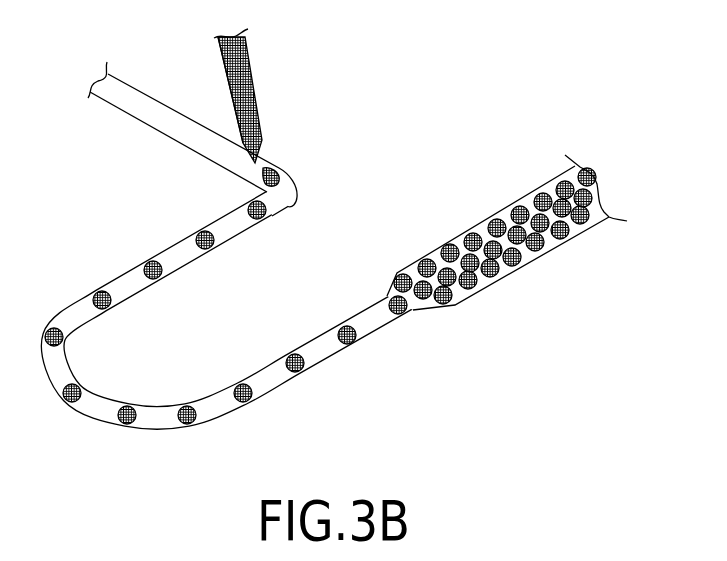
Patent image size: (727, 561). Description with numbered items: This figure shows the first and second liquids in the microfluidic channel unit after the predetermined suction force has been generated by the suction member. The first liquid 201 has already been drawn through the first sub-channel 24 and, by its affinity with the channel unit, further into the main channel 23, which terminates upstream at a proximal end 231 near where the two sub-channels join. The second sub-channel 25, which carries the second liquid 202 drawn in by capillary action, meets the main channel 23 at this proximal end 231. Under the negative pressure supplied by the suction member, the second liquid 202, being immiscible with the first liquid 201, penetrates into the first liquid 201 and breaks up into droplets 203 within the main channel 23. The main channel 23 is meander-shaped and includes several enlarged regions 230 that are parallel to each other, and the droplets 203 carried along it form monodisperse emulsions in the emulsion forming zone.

The main channel 23 is at (541, 284).
The enlarged regions 230 is at (498, 213).
The droplets 203 is at (294, 356).
The first sub-channel 24 is at (162, 104).
The first liquid 201 is at (178, 124).
The second sub-channel 25 is at (258, 118).
The second liquid 202 is at (236, 63).
The proximal end 231 is at (281, 170).